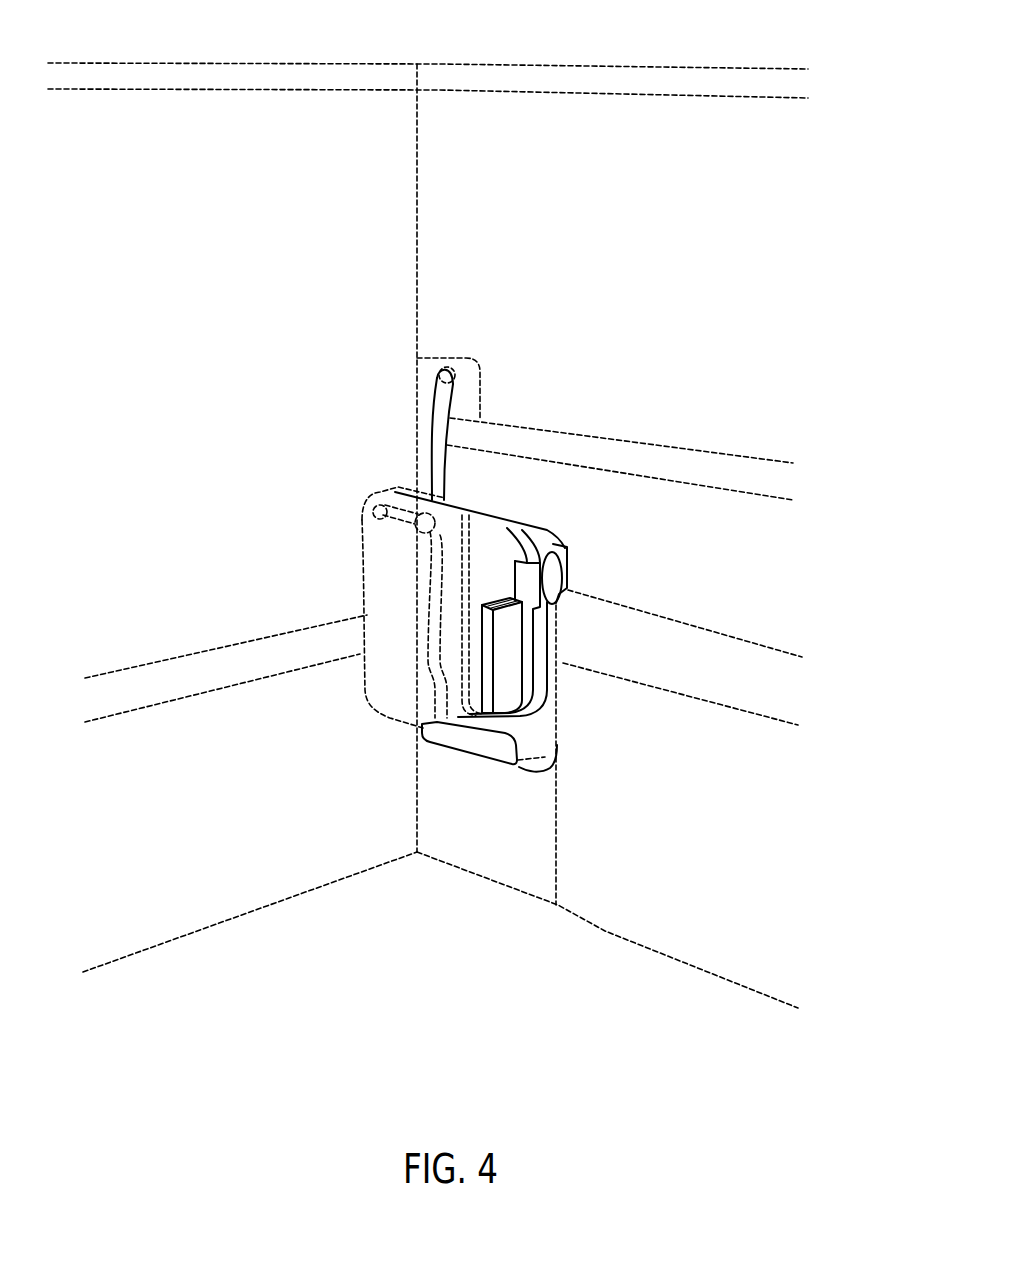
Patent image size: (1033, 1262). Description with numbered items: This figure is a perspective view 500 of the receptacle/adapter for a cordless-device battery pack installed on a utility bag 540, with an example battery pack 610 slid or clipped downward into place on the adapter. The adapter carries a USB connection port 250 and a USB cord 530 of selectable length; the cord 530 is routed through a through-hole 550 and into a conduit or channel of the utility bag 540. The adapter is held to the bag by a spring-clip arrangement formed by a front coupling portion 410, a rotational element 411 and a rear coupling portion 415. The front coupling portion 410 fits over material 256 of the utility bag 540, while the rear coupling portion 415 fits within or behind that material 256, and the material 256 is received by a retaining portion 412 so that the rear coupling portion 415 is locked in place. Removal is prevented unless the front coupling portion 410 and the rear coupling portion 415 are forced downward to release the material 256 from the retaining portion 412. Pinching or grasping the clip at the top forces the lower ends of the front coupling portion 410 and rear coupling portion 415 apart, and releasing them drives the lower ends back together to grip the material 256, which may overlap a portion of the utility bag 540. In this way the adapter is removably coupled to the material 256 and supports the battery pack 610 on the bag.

The perspective view 500 is at (722, 27).
The through-hole 550 is at (450, 368).
The USB cord 530 is at (440, 435).
The battery pack 610 is at (392, 598).
The front coupling portion 410 is at (517, 541).
The rotational element 411 is at (548, 577).
The rear coupling portion 415 is at (565, 577).
The USB connection port 250 is at (507, 653).
The material 256 is at (533, 732).
The retaining portion 412 is at (469, 741).
The utility bag 540 is at (540, 805).